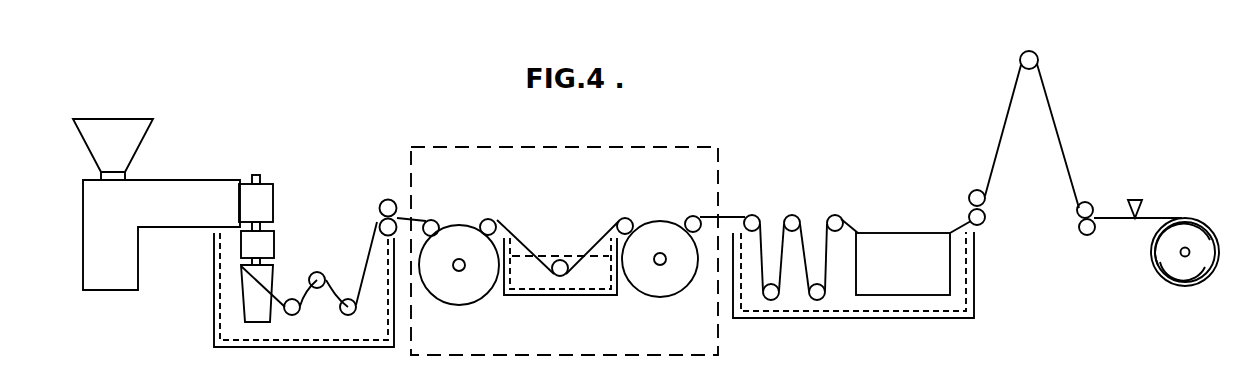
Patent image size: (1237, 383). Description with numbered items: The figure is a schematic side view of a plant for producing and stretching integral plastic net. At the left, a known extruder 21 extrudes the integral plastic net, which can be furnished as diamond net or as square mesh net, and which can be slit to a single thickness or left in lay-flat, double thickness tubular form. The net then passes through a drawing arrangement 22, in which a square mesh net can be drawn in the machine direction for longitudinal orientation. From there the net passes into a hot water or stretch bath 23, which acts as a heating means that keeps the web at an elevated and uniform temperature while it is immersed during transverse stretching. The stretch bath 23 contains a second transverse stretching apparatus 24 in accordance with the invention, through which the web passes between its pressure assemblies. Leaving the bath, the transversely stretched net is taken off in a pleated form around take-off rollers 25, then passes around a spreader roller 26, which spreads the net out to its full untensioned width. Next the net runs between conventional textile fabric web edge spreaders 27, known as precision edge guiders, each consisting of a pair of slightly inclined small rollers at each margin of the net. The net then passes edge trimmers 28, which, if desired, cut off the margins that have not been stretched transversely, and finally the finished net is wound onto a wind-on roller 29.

The extruder 21 is at (192, 188).
The drawing arrangement 22 is at (648, 164).
The stretch bath 23 is at (832, 320).
The second transverse stretching apparatus 24 is at (898, 243).
The take-off rollers 25 is at (976, 192).
The spreader roller 26 is at (1023, 52).
The textile fabric web edge spreaders 27 is at (1089, 236).
The edge trimmers 28 is at (1135, 198).
The wind-on roller 29 is at (1167, 253).